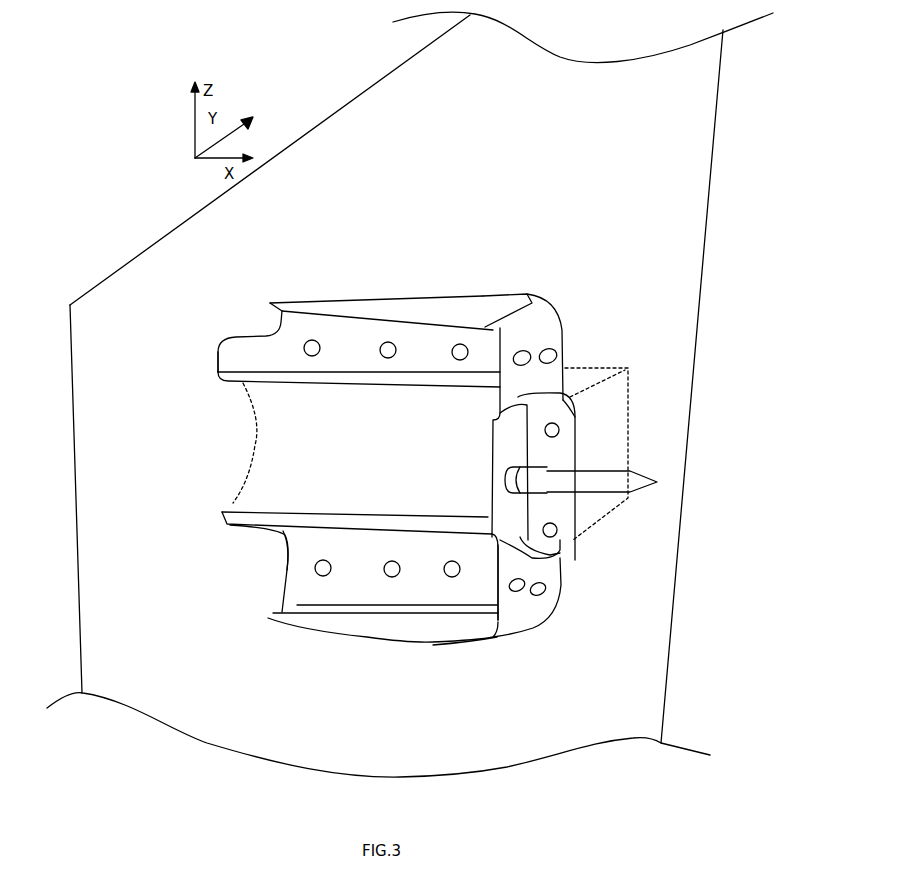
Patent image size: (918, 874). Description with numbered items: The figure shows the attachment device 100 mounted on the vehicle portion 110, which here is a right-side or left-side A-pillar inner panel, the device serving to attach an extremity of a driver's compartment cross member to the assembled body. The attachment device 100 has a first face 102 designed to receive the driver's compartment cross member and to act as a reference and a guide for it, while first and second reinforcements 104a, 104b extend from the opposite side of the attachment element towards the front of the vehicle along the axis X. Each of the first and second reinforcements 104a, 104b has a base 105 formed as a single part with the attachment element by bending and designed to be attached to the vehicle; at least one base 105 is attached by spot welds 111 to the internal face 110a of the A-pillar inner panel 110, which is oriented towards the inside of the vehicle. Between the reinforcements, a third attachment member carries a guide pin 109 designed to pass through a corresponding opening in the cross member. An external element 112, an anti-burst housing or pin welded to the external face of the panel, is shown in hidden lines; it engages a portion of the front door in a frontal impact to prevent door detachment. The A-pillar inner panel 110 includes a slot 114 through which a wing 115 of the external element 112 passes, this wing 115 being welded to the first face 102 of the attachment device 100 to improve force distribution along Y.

The attachment device 100 is at (544, 295).
The first face 102 is at (529, 610).
The first reinforcement 104a is at (365, 343).
The second reinforcement 104b is at (385, 593).
The base 105 is at (253, 358).
The guide pin 109 is at (622, 467).
The vehicle portion 110 is at (642, 190).
The internal face 110a is at (570, 332).
The spot welds 111 is at (388, 347).
The external element 112 is at (567, 370).
The slot 114 is at (568, 398).
The wing 115 is at (557, 546).